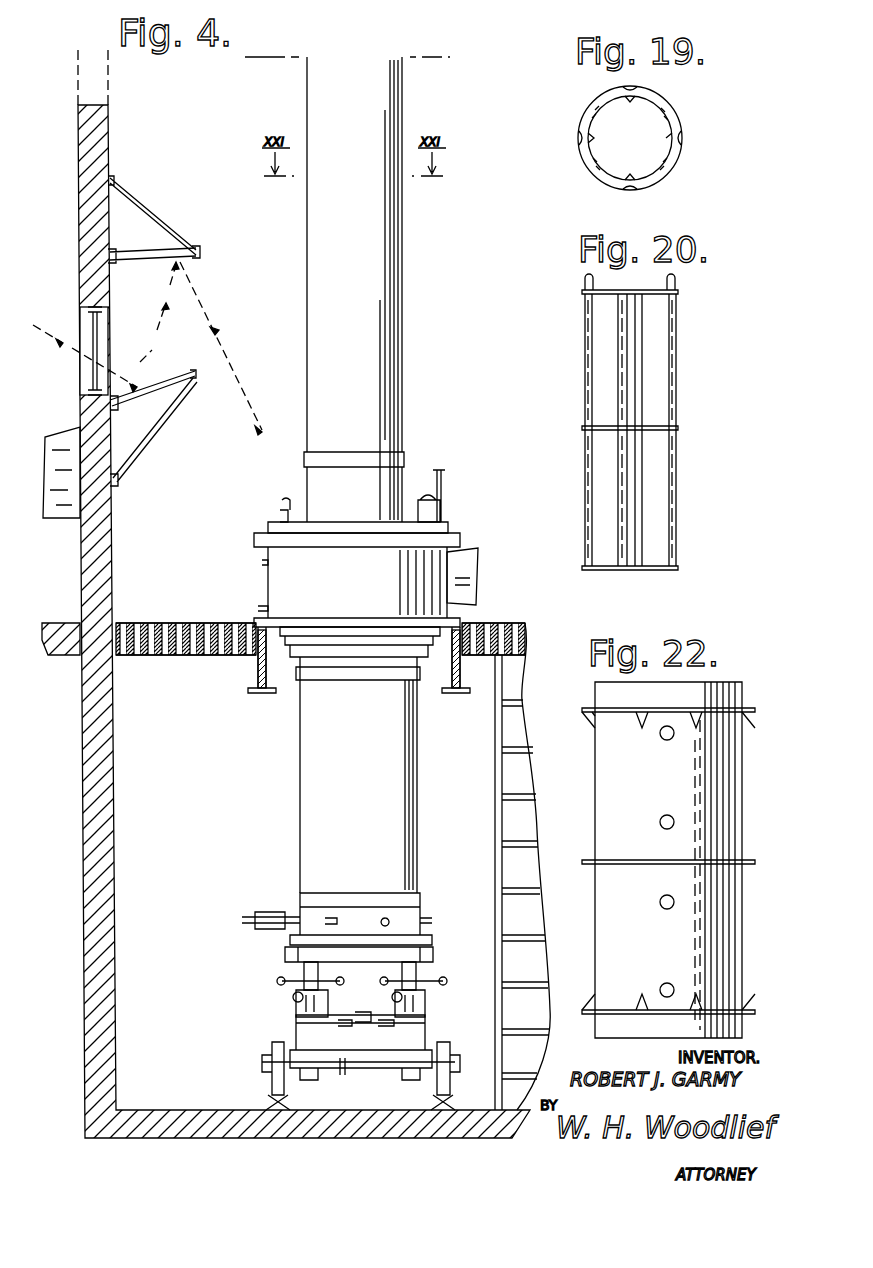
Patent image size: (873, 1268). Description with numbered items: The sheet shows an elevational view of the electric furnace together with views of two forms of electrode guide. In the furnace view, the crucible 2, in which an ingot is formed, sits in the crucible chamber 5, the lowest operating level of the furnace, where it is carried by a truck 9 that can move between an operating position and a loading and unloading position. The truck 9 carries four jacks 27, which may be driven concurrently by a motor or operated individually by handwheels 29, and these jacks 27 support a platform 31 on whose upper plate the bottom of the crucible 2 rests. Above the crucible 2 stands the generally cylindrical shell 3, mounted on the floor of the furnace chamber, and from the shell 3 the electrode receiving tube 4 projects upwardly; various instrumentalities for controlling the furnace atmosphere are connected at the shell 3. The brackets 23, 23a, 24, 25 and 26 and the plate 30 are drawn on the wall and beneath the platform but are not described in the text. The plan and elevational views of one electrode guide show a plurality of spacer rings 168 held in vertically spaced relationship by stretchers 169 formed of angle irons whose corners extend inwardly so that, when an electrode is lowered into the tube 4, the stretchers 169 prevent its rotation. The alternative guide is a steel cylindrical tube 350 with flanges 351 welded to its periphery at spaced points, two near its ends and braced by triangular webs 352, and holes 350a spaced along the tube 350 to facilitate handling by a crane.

In FIG. 4, the crucible 2 is at (296, 780).
In FIG. 4, the shell 3 is at (276, 585).
In FIG. 4, the electrode receiving tube 4 is at (398, 328).
In FIG. 4, the crucible chamber 5 is at (165, 776).
In FIG. 4, the truck 9 is at (316, 1035).
In FIG. 4, the lower bracket 23 is at (193, 380).
In FIG. 4, the bracket arm 23a is at (168, 372).
In FIG. 4, the upper bracket arm 24 is at (198, 255).
In FIG. 4, the upper brace 25 is at (148, 222).
In FIG. 4, the lower brace 26 is at (150, 438).
In FIG. 4, the jacks 27 is at (302, 972).
In FIG. 4, the handwheels 29 is at (277, 983).
In FIG. 4, the plate 30 is at (296, 968).
In FIG. 4, the platform 31 is at (280, 952).
In FIG. 19, the spacer rings 168 is at (660, 108).
In FIG. 20, the spacer rings 168 is at (600, 294).
In FIG. 19, the stretchers 169 is at (670, 162).
In FIG. 20, the stretchers 169 is at (584, 378).
In FIG. 22, the cylindrical tube 350 is at (718, 682).
In FIG. 22, the holes 350a is at (662, 820).
In FIG. 22, the flanges 351 is at (695, 708).
In FIG. 22, the triangular webs 352 is at (703, 720).